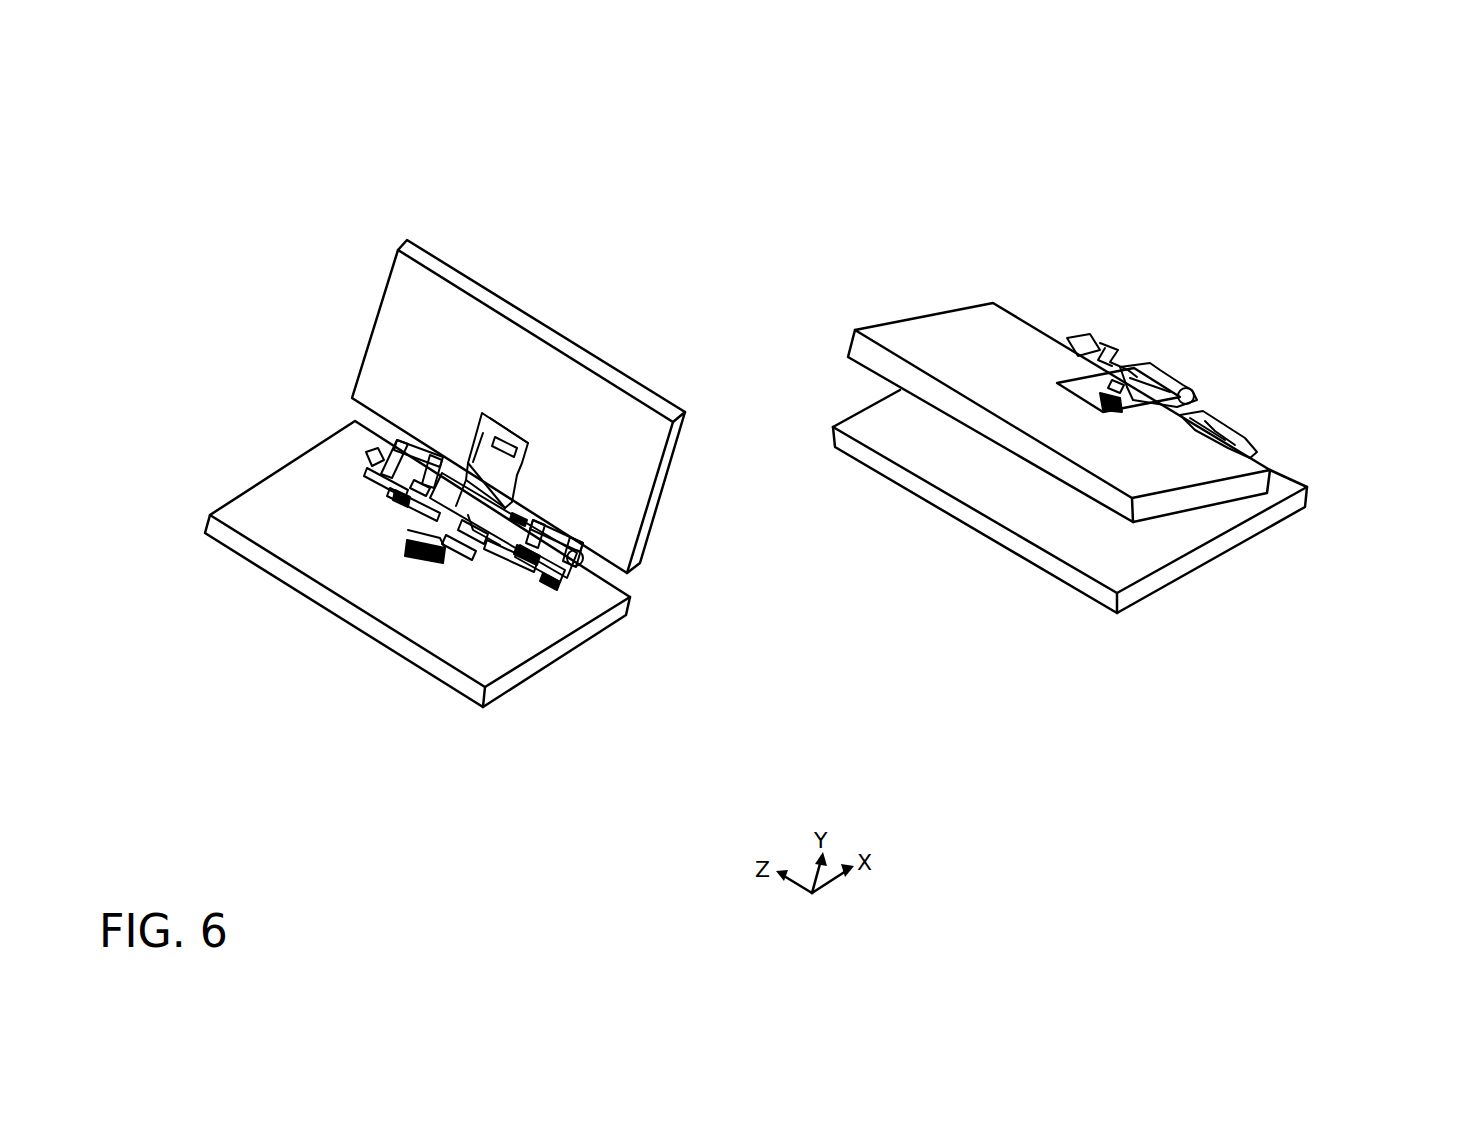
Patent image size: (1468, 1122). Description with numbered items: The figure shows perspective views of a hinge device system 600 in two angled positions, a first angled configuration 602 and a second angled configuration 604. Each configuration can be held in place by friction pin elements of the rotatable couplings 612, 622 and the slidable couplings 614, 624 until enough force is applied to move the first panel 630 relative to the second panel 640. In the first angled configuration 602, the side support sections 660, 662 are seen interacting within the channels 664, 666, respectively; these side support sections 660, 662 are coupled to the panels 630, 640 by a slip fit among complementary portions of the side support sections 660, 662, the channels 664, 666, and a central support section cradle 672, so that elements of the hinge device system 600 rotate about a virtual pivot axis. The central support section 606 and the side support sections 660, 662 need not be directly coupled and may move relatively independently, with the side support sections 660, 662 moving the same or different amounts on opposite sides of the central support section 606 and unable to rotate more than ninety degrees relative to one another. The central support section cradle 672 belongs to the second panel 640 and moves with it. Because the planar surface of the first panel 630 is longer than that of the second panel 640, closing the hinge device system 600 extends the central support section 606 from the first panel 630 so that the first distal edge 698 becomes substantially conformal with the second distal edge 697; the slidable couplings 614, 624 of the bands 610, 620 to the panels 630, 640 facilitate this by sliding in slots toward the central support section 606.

The hinge device system 600 is at (193, 110).
The first angled configuration 602 is at (516, 202).
The second angled configuration 604 is at (1035, 205).
The central support section 606 is at (498, 537).
The band 610 is at (468, 548).
The rotatable coupling 612 is at (472, 530).
The slidable coupling 614 is at (442, 562).
The band 620 is at (1143, 390).
The rotatable coupling 622 is at (483, 500).
The slidable coupling 624 is at (518, 456).
The first panel 630 is at (335, 441).
The second panel 640 is at (410, 278).
The side support section 660 is at (497, 473).
The side support section 662 is at (535, 557).
The channel 664 is at (372, 470).
The channel 666 is at (560, 560).
The central support section cradle 672 is at (432, 480).
The second distal edge 697 is at (433, 263).
The first distal edge 698 is at (237, 542).